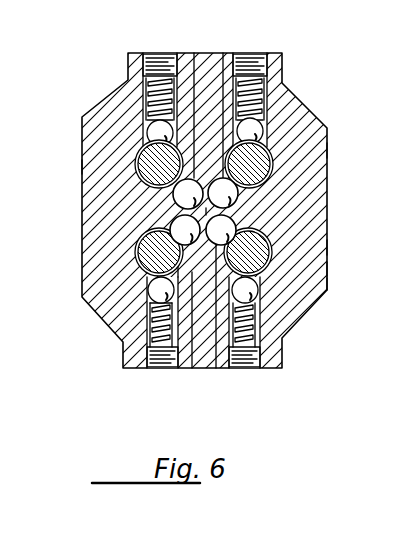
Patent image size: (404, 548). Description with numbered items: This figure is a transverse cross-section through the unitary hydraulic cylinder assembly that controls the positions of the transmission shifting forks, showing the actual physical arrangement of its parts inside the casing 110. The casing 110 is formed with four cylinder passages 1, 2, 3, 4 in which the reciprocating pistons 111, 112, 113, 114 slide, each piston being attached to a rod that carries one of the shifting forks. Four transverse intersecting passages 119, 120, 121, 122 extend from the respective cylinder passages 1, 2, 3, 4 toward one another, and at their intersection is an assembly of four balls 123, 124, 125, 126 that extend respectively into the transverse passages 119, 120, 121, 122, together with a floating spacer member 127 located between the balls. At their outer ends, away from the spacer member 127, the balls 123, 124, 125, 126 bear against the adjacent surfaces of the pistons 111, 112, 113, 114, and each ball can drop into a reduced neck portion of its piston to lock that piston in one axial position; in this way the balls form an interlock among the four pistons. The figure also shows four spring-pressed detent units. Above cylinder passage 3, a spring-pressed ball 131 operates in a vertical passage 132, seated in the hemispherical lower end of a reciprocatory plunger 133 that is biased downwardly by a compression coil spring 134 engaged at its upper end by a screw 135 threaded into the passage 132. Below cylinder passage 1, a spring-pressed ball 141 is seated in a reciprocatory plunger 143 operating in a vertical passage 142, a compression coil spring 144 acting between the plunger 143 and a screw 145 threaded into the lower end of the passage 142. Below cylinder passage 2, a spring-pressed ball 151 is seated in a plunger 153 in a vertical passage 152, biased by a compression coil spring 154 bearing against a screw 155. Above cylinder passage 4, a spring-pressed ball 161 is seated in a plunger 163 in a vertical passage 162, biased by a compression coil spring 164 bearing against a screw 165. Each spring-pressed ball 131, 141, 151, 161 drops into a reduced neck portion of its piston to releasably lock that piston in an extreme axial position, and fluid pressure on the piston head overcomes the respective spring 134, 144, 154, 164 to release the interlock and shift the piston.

The cylinder passage 1 is at (130, 268).
The cylinder passage 2 is at (327, 247).
The cylinder passage 3 is at (327, 150).
The cylinder passage 4 is at (80, 166).
The casing 110 is at (313, 287).
The piston 111 is at (136, 253).
The piston 112 is at (272, 248).
The piston 113 is at (273, 166).
The piston 114 is at (138, 170).
The transverse passage 119 is at (170, 229).
The transverse passage 120 is at (236, 227).
The transverse passage 121 is at (238, 193).
The transverse passage 122 is at (173, 195).
The ball 123 is at (190, 365).
The ball 124 is at (216, 355).
The ball 125 is at (223, 55).
The ball 126 is at (194, 53).
The floating spacer member 127 is at (238, 205).
The spring-pressed ball 131 is at (305, 105).
The vertical passage 132 is at (327, 127).
The reciprocatory plunger 133 is at (288, 90).
The compression coil spring 134 is at (285, 73).
The screw 135 is at (247, 60).
The spring-pressed ball 141 is at (143, 332).
The vertical passage 142 is at (120, 312).
The reciprocatory plunger 143 is at (148, 335).
The compression coil spring 144 is at (157, 350).
The screw 145 is at (157, 367).
The spring-pressed ball 151 is at (258, 292).
The vertical passage 152 is at (325, 270).
The reciprocatory plunger 153 is at (264, 306).
The compression coil spring 154 is at (282, 338).
The screw 155 is at (243, 367).
The spring-pressed ball 161 is at (140, 114).
The vertical passage 162 is at (145, 142).
The reciprocatory plunger 163 is at (158, 132).
The compression coil spring 164 is at (156, 120).
The screw 165 is at (148, 53).